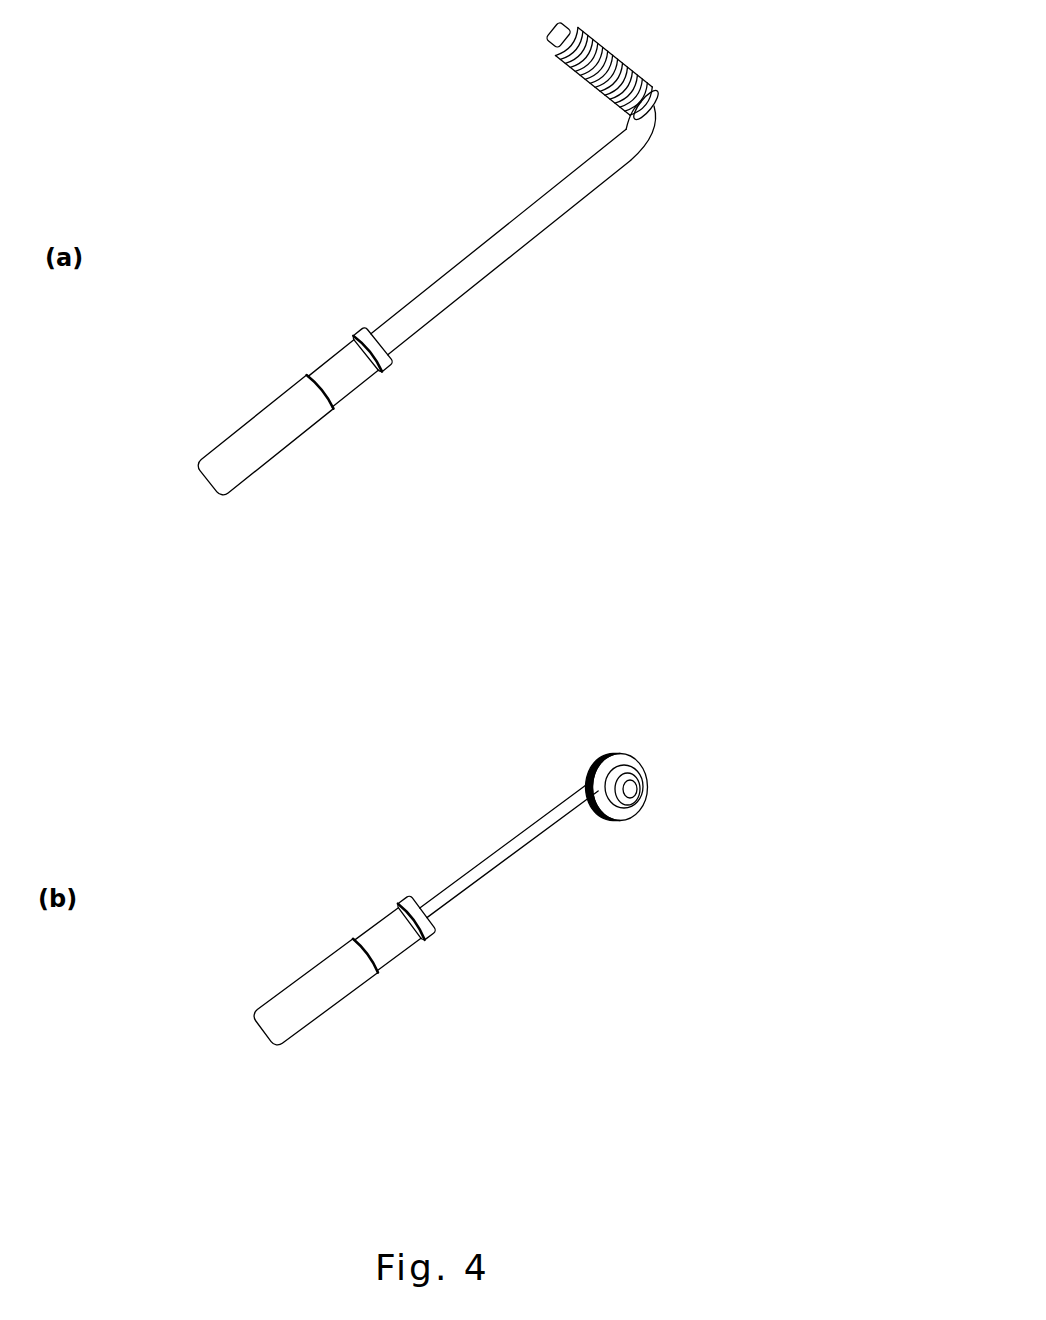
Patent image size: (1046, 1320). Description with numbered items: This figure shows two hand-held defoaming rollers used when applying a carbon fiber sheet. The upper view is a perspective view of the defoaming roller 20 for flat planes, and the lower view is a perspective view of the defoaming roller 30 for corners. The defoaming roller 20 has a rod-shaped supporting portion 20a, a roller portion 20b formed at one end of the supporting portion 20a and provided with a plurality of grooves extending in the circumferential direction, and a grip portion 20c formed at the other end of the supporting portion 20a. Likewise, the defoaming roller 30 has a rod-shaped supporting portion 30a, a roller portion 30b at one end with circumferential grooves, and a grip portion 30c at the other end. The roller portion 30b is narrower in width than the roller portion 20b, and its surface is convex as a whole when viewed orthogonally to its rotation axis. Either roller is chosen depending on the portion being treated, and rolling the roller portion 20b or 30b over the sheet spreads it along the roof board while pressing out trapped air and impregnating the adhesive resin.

The defoaming roller for flat planes 20 is at (428, 205).
The rod-shaped supporting portion 20a is at (540, 230).
The roller portion 20b is at (620, 57).
The grip portion 20c is at (252, 418).
The defoaming roller for corners 30 is at (478, 831).
The rod-shaped supporting portion 30a is at (488, 875).
The roller portion 30b is at (618, 752).
The grip portion 30c is at (333, 1010).